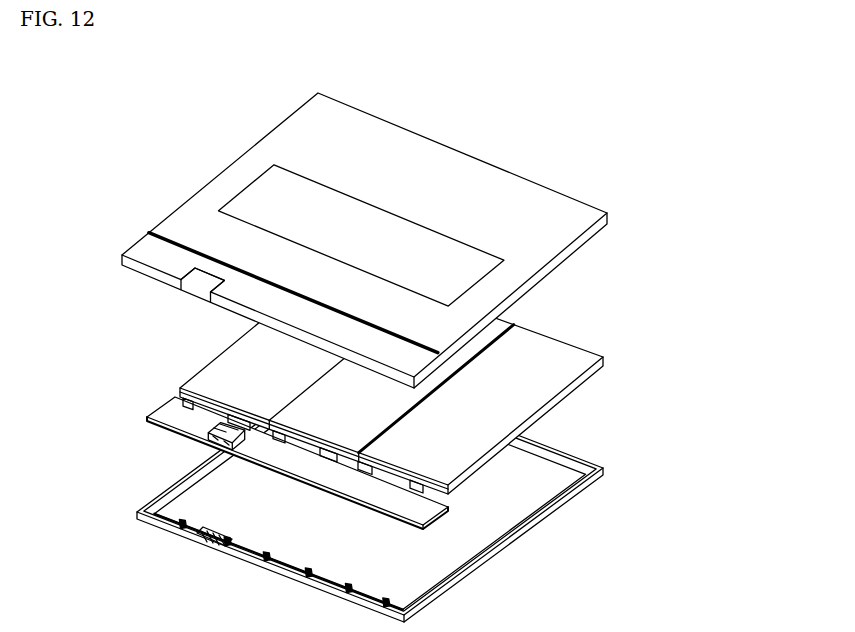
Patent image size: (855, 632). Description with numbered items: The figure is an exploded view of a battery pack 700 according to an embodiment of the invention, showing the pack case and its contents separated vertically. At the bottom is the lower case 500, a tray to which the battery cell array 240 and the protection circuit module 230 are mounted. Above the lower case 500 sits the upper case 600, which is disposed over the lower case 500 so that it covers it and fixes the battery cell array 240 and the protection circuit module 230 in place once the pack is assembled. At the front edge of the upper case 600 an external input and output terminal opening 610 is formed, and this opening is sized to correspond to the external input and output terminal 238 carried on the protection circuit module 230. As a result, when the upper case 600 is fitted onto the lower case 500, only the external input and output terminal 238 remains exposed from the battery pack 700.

The battery pack 700 is at (190, 102).
The upper case 600 is at (486, 148).
The external input and output terminal opening 610 is at (200, 289).
The battery cell array 240 is at (590, 336).
The protection circuit module 230 is at (130, 398).
The external input and output terminal 238 is at (206, 446).
The lower case 500 is at (582, 432).